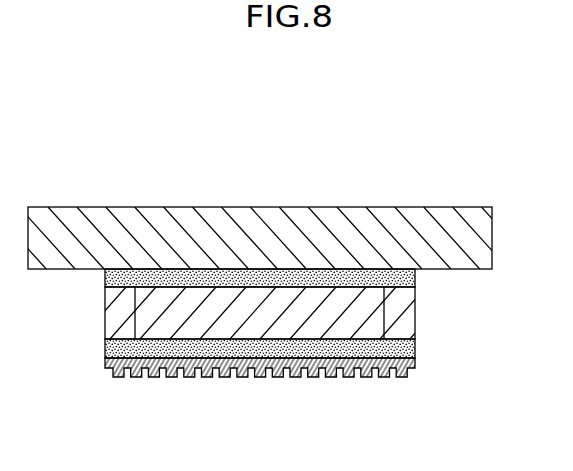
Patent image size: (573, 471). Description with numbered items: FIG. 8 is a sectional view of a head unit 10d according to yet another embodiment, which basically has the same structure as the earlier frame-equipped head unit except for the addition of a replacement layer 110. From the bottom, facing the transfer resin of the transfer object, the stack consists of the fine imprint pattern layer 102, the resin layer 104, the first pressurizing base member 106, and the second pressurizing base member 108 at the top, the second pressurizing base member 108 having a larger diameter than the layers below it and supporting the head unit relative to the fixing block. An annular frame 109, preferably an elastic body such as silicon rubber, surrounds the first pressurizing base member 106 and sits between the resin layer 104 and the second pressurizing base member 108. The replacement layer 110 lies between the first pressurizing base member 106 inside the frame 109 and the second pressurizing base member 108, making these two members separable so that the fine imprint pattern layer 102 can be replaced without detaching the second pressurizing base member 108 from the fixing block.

The semiconductor device 10d is at (395, 168).
The second pressurizing base member 108 is at (441, 215).
The replacement layer 110 is at (417, 278).
The first pressurizing base member 106 is at (363, 308).
The frame 109 is at (117, 320).
The resin layer 104 is at (415, 353).
The fine imprint pattern layer 102 is at (401, 377).